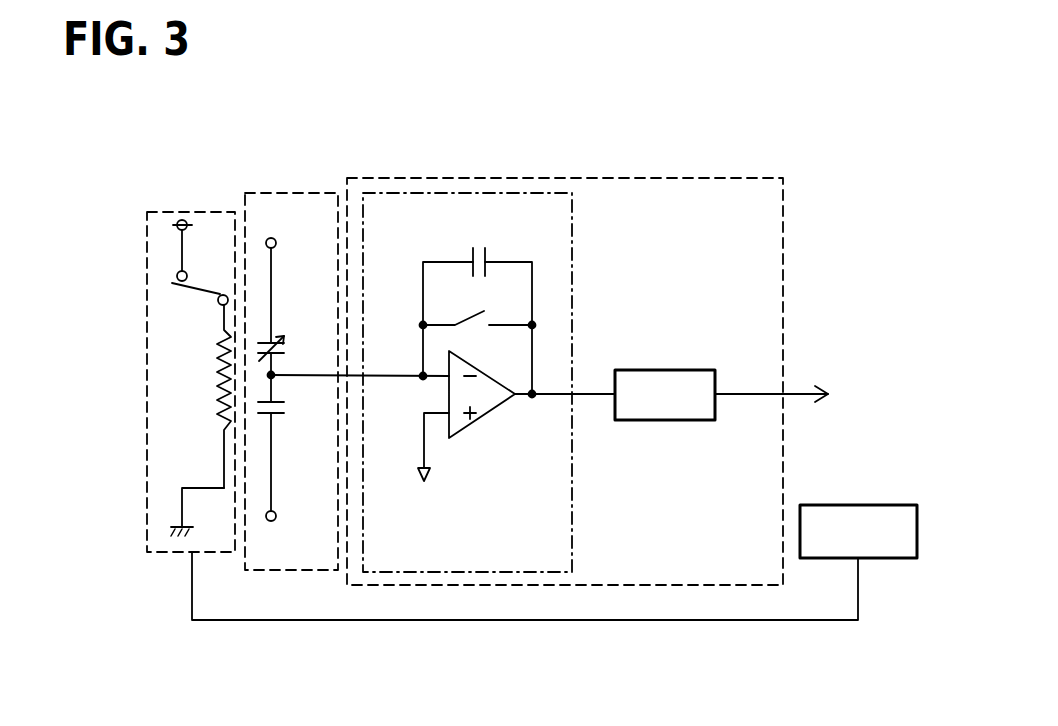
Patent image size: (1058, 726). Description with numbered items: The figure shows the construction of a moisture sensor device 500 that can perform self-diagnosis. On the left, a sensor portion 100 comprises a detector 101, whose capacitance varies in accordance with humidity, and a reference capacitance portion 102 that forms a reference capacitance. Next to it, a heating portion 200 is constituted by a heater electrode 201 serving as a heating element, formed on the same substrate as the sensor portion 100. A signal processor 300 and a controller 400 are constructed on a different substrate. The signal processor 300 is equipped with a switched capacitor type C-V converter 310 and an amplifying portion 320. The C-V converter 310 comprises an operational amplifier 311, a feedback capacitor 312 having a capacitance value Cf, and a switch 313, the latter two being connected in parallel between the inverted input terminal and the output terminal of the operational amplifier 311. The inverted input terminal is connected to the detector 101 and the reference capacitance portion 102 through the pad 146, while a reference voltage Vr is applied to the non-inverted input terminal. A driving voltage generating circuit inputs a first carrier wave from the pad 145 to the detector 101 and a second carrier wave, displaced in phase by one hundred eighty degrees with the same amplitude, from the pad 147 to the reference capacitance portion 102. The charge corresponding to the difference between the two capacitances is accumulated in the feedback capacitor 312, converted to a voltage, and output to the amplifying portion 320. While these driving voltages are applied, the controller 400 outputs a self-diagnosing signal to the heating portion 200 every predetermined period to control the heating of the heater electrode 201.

The sensor portion 100 is at (282, 193).
The detector 101 is at (276, 334).
The reference capacitance portion 102 is at (283, 422).
The pad 145 is at (267, 239).
The pad 146 is at (274, 377).
The pad 147 is at (266, 521).
The heating portion 200 is at (166, 212).
The heater electrode 201 is at (212, 345).
The signal processor 300 is at (608, 178).
The C-V converter 310 is at (480, 193).
The operational amplifier 311 is at (482, 420).
The feedback capacitor 312 is at (469, 258).
The switch 313 is at (476, 313).
The amplifying portion 320 is at (667, 370).
The controller 400 is at (868, 505).
The moisture sensor device 500 is at (796, 166).